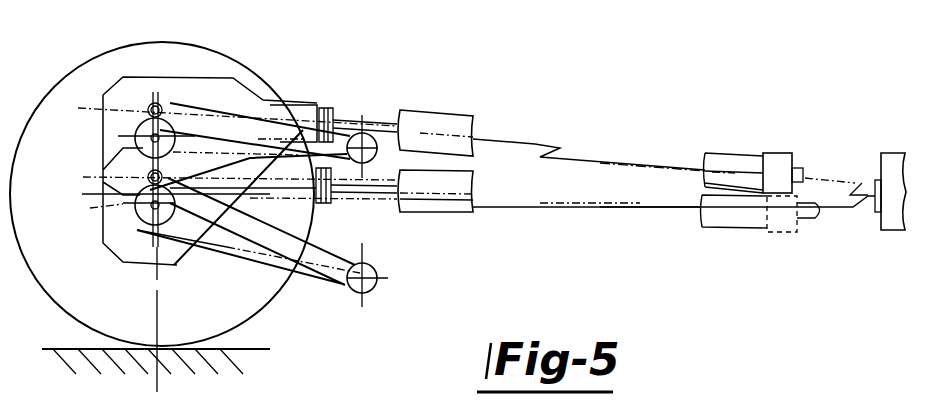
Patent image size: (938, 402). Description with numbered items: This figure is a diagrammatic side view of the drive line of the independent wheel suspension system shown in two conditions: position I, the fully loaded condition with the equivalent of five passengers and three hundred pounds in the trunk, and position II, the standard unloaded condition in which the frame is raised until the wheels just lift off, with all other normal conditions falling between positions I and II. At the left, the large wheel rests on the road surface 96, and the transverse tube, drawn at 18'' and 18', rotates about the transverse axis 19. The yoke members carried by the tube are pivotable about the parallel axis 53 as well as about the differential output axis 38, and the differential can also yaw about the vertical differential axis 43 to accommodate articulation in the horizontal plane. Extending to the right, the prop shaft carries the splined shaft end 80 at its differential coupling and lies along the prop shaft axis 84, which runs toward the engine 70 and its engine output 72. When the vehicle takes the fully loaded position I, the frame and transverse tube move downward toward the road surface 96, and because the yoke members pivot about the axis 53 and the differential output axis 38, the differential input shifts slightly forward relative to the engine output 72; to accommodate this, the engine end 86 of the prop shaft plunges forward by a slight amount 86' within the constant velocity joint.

The parallel axis 53 is at (161, 106).
The differential output axis 38 is at (136, 218).
The vertical differential axis 43 is at (150, 272).
The road surface 96 is at (262, 348).
The roller 18'' is at (381, 127).
The splined shaft end 80 is at (455, 122).
The prop shaft axis 84 is at (530, 142).
The position II is at (635, 160).
The position I is at (647, 207).
The roller 18' is at (391, 262).
The transverse axis 19 is at (365, 285).
The engine end of the prop shaft 86 is at (805, 149).
The slight amount of plunge 86' is at (793, 248).
The engine output 72 is at (878, 214).
The engine 70 is at (896, 150).